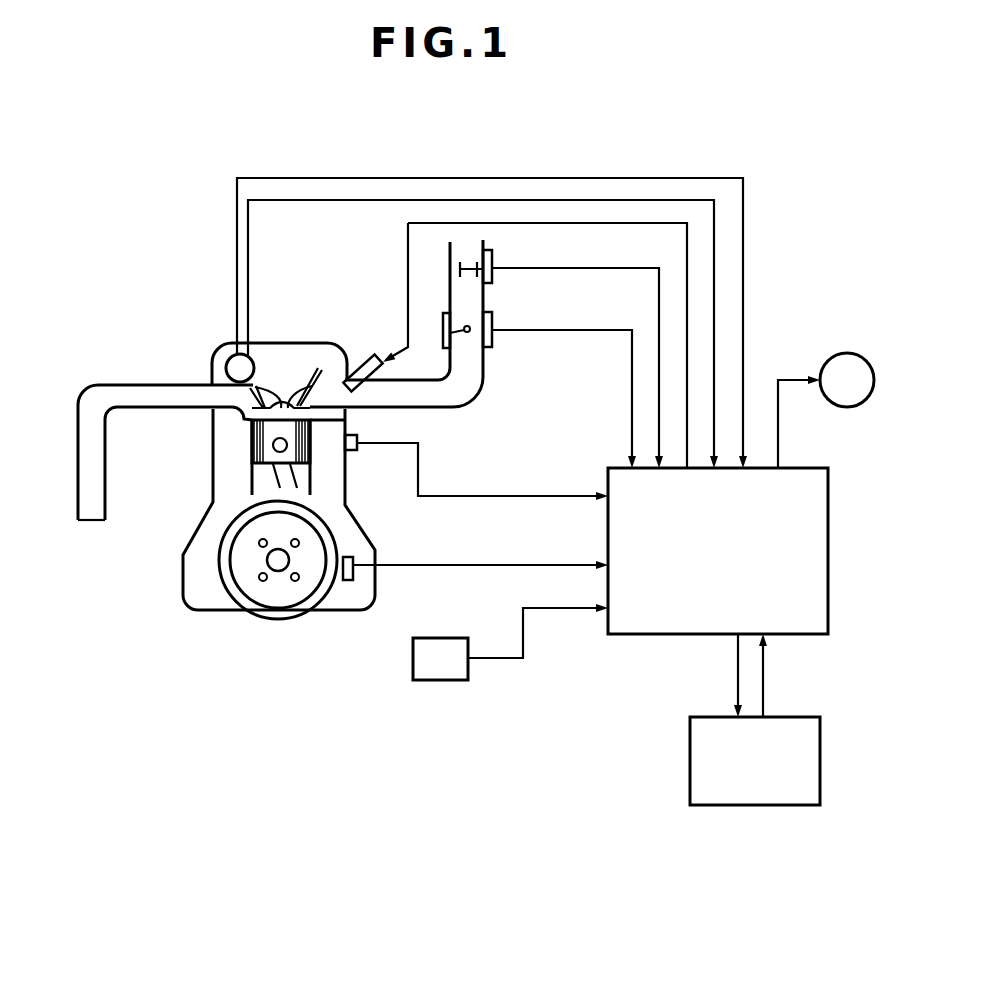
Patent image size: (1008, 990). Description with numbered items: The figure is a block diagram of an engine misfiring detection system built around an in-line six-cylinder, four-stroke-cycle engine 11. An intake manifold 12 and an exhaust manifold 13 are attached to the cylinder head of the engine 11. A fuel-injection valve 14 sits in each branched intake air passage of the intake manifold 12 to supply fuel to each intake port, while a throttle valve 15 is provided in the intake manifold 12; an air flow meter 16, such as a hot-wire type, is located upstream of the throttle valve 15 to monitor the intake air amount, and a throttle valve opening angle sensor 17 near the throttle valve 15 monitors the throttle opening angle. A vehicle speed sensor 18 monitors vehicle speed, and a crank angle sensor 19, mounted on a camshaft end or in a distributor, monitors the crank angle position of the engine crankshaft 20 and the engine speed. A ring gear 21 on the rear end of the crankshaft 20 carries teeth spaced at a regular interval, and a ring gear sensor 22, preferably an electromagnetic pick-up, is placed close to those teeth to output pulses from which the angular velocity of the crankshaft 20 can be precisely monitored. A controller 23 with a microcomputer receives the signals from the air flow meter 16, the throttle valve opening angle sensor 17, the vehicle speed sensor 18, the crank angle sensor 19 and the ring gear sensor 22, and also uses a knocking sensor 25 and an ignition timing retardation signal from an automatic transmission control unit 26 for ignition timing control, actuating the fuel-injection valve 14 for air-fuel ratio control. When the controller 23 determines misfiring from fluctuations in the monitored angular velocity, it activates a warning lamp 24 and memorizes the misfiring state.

The engine 11 is at (176, 596).
The intake manifold 12 is at (467, 390).
The exhaust manifold 13 is at (100, 388).
The fuel-injection valve 14 is at (362, 370).
The throttle valve 15 is at (468, 333).
The air flow meter 16 is at (492, 263).
The throttle valve opening angle sensor 17 is at (492, 320).
The vehicle speed sensor 18 is at (437, 670).
The crank angle sensor 19 is at (229, 359).
The crankshaft 20 is at (282, 563).
The ring gear 21 is at (305, 610).
The ring gear sensor 22 is at (353, 562).
The controller 23 is at (657, 620).
The warning lamp 24 is at (853, 400).
The knocking sensor 25 is at (357, 450).
The automatic transmission control unit 26 is at (748, 797).